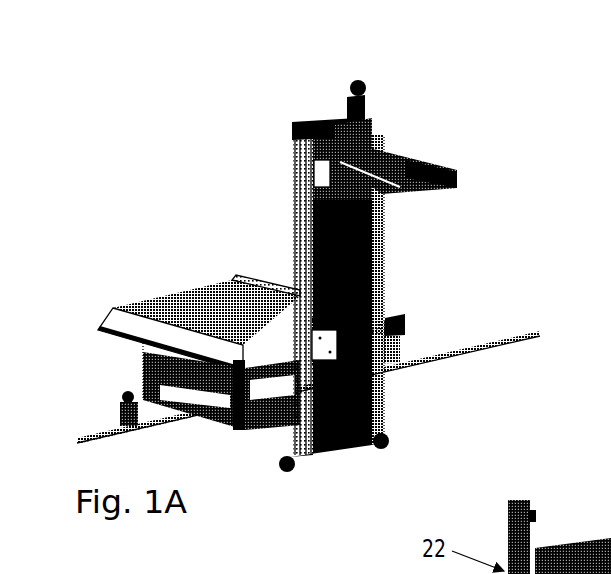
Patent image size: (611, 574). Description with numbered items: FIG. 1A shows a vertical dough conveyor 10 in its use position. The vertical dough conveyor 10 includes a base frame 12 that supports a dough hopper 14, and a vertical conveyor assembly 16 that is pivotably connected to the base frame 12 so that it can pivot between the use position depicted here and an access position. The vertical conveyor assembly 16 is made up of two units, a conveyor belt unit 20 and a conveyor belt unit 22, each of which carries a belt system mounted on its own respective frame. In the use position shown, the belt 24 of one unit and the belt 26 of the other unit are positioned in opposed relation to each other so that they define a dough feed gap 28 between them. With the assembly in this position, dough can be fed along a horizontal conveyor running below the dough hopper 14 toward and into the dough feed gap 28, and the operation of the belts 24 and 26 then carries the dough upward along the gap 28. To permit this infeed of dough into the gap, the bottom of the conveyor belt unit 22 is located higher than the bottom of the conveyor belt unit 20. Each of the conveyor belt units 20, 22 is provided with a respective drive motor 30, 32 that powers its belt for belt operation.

The vertical dough conveyor 10 is at (320, 267).
The base frame 12 is at (284, 411).
The dough hopper 14 is at (141, 310).
The vertical conveyor assembly 16 is at (298, 234).
The conveyor belt unit 20 is at (386, 226).
The conveyor belt unit 22 is at (299, 171).
The belt 24 is at (368, 249).
The belt 26 is at (327, 123).
The dough feed gap 28 is at (338, 146).
The drive motor 30 is at (399, 313).
The drive motor 32 is at (366, 90).